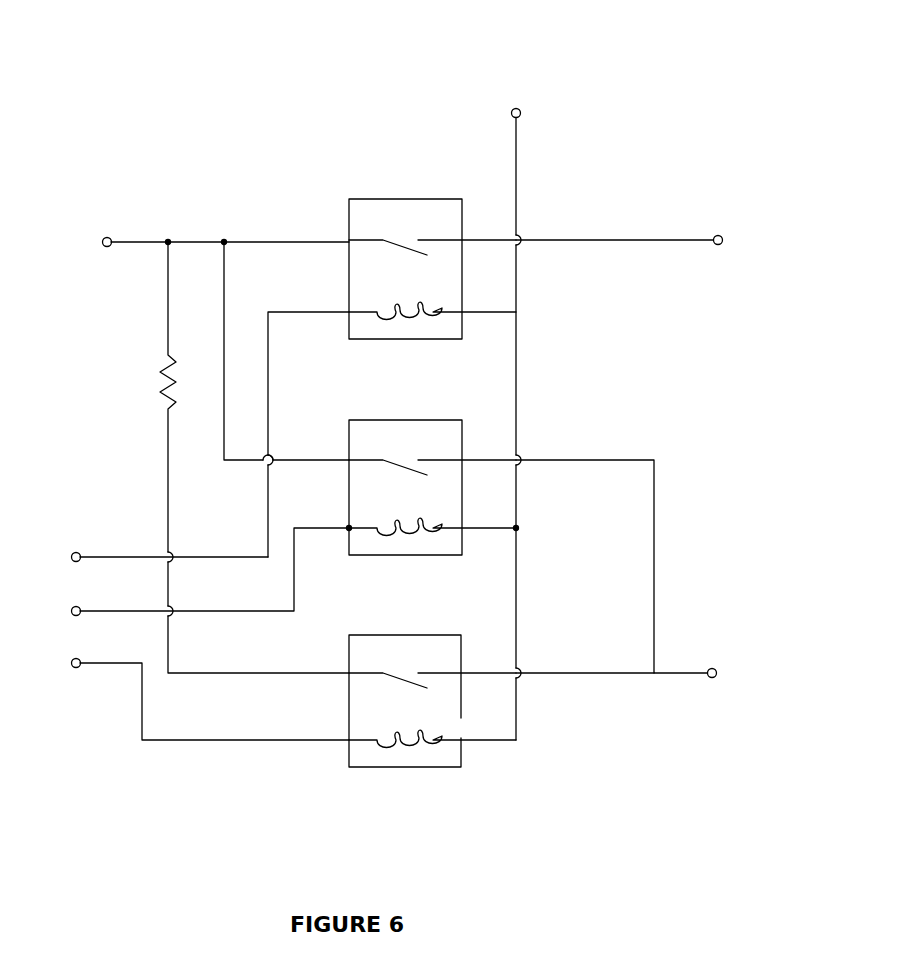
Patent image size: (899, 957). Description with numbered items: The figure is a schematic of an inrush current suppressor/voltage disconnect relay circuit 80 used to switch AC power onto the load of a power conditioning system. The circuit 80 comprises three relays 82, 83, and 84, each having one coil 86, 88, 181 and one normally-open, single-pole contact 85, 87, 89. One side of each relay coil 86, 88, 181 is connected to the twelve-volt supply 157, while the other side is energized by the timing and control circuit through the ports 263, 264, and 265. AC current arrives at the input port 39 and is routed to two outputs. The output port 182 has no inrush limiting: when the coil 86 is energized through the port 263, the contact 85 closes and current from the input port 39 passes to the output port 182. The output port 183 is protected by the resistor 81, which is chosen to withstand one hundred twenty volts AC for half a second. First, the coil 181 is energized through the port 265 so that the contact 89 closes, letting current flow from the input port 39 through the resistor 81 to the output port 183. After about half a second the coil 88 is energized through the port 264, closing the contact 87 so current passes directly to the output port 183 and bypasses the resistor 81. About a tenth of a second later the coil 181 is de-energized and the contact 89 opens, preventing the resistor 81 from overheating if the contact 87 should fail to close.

The inrush current suppressor/voltage disconnect relay circuit 80 is at (680, 87).
The input port 39 is at (106, 238).
The resistor 81 is at (165, 364).
The relay 82 is at (392, 356).
The relay 83 is at (433, 469).
The relay 84 is at (432, 701).
The contact 85 is at (396, 248).
The coil 86 is at (420, 308).
The contact 87 is at (399, 468).
The coil 88 is at (420, 524).
The contact 89 is at (399, 681).
The +12 volt supply 157 is at (521, 113).
The coil 181 is at (385, 746).
The output port 182 is at (719, 235).
The output port 183 is at (709, 678).
The port 263 is at (73, 553).
The port 264 is at (71, 614).
The port 265 is at (73, 667).